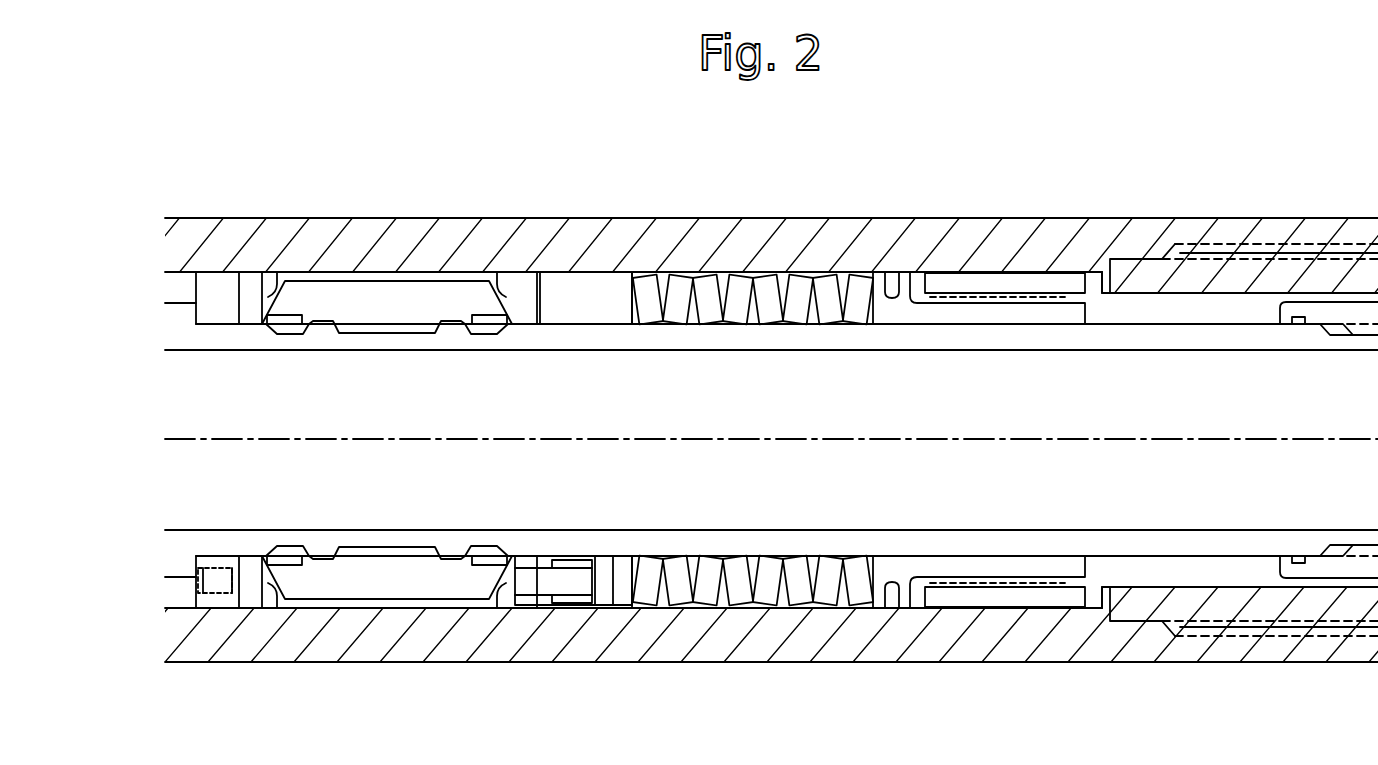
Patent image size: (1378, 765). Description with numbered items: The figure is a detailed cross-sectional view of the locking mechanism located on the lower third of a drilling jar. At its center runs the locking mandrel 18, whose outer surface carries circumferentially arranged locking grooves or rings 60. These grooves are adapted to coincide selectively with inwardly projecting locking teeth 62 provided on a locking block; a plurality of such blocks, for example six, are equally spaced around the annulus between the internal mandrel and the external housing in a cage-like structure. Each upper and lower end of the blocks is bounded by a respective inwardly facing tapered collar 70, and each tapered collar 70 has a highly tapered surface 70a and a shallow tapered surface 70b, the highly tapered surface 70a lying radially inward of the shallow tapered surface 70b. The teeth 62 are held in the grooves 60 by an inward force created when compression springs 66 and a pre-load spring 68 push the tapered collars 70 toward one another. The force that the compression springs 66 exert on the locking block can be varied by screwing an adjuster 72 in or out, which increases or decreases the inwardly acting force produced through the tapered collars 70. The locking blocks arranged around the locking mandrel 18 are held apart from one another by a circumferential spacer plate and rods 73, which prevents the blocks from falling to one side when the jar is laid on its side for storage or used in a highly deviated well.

The locking mandrel 18 is at (177, 338).
The locking grooves 60 is at (296, 334).
The locking teeth 62 is at (393, 322).
The compression springs 66 is at (745, 298).
The pre-load spring 68 is at (601, 298).
The tapered collar 70 is at (252, 318).
The highly tapered surface 70a is at (265, 305).
The shallow tapered surface 70b is at (268, 316).
The adjuster 72 is at (985, 315).
The rods 73 is at (580, 606).